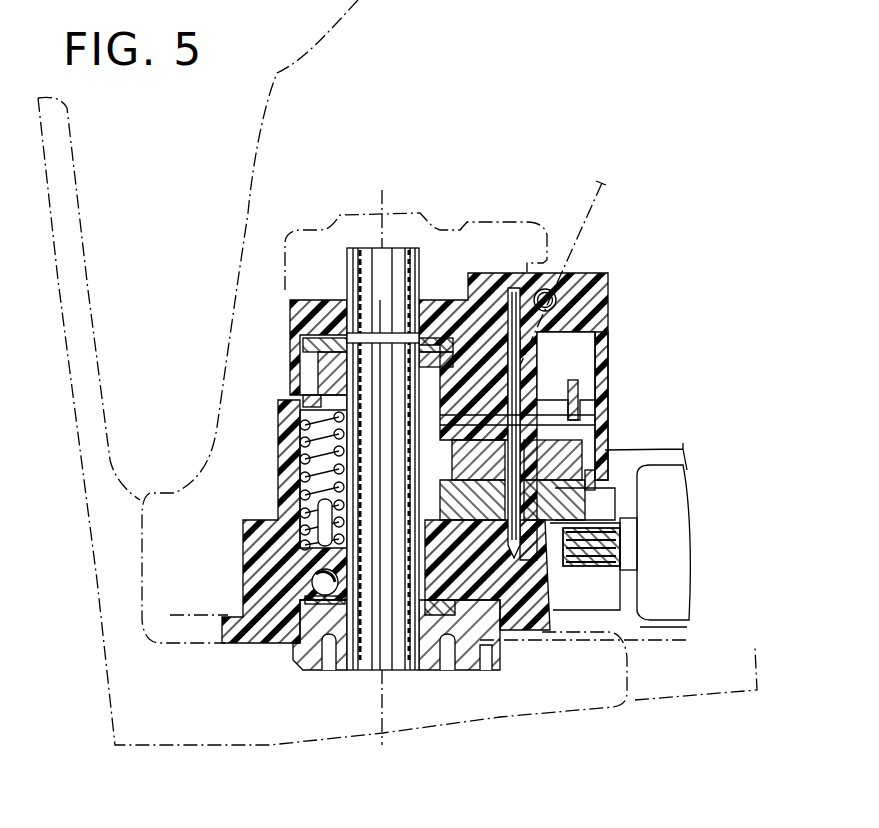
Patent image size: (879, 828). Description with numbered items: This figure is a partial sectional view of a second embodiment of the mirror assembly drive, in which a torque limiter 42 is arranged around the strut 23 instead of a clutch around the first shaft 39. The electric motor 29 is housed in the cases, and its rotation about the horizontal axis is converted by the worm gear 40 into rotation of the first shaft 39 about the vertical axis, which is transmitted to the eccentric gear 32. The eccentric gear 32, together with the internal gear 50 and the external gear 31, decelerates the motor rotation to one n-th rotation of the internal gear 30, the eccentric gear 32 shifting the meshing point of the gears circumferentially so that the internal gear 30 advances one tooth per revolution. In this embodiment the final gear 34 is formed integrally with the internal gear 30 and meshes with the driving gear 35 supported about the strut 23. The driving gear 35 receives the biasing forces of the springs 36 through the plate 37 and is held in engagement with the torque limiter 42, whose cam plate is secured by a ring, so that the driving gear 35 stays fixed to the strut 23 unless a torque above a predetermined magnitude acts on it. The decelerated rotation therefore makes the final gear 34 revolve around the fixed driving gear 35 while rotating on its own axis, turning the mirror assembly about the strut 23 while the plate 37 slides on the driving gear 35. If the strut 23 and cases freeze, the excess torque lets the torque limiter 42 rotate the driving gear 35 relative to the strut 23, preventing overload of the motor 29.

The strut 23 is at (405, 648).
The electric motor 29 is at (688, 531).
The internal gear 30 is at (603, 413).
The external gear 31 is at (587, 467).
The eccentric gear 32 is at (556, 530).
The final gear 34 is at (587, 380).
The driving gear 35 is at (318, 376).
The springs 36 is at (303, 466).
The plate 37 is at (302, 402).
The first shaft 39 is at (516, 290).
The worm gear 40 is at (622, 548).
The torque limiter 42 is at (300, 342).
The internal gear 50 is at (592, 479).